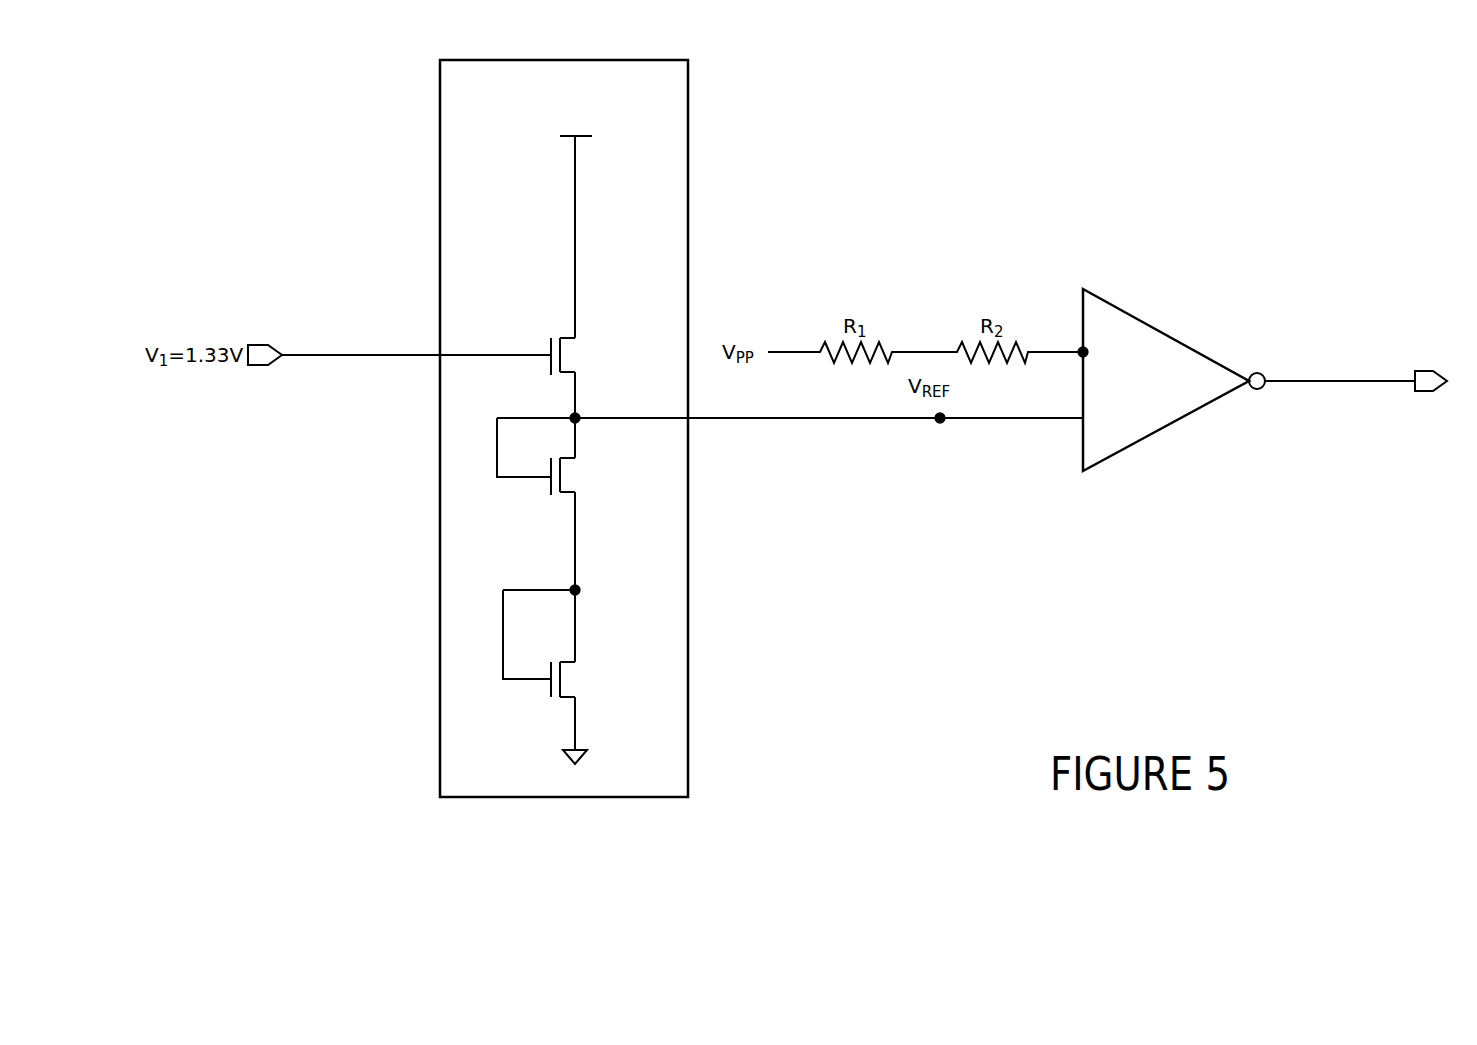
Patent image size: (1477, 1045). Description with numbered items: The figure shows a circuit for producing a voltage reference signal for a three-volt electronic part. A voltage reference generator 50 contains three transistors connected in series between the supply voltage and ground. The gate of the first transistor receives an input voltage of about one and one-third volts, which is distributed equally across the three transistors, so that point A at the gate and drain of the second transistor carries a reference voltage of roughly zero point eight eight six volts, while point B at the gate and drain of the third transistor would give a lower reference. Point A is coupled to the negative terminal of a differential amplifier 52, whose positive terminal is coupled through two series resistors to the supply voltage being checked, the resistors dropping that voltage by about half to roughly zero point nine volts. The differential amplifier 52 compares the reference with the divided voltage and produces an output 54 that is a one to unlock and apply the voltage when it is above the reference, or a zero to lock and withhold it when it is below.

The voltage reference generator 50 is at (689, 122).
The differential amplifier 52 is at (1127, 310).
The output 54 is at (1293, 375).